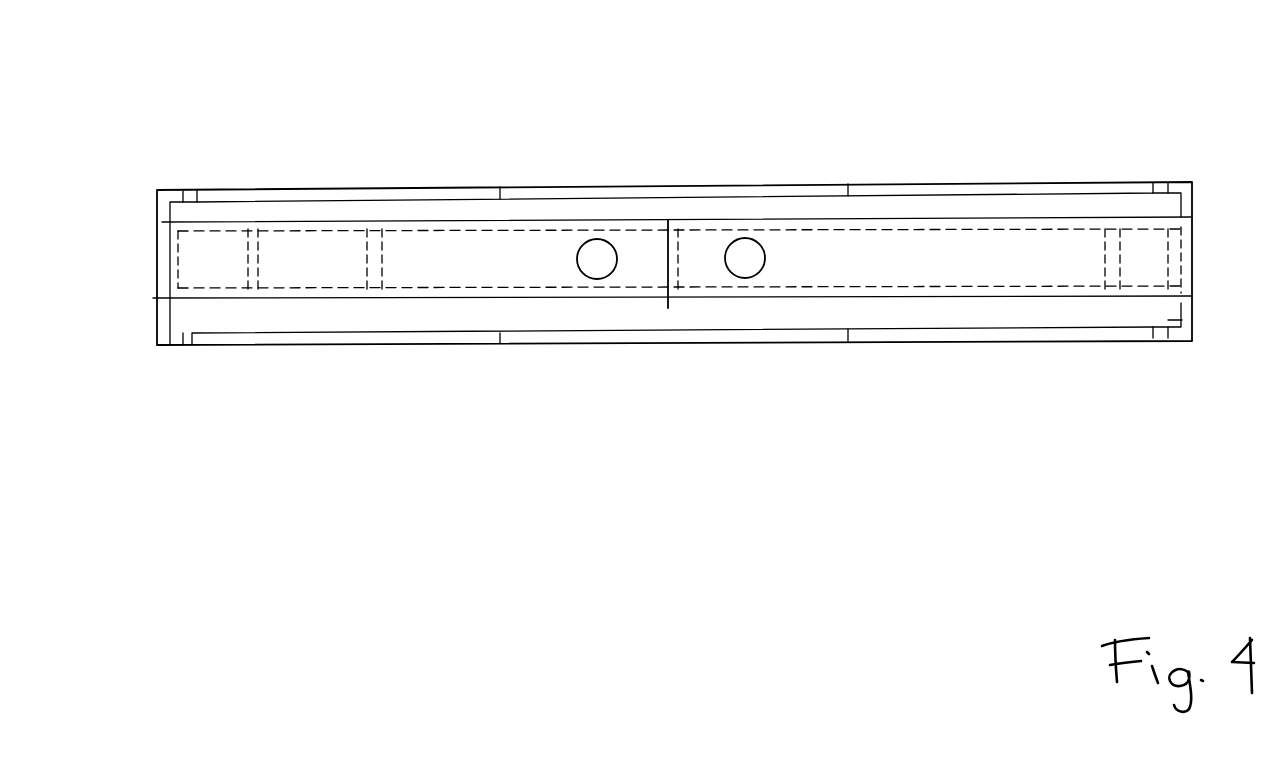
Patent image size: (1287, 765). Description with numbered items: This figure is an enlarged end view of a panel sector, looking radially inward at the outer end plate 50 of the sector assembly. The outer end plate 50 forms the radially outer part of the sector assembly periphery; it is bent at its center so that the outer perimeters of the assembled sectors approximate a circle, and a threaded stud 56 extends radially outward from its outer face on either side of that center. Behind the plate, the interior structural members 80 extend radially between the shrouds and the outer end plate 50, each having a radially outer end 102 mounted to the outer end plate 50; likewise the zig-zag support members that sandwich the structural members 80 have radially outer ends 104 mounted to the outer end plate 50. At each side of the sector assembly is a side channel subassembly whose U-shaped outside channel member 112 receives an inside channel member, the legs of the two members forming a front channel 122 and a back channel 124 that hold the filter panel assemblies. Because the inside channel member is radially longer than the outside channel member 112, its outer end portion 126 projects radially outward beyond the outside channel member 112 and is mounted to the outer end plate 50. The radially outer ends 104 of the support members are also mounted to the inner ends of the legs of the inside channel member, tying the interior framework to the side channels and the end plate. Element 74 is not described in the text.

The outer end plate 50 is at (597, 300).
The threaded stud 56 is at (578, 258).
The tube wall 74 is at (598, 187).
The structural member 80 is at (678, 218).
The radially outer end of structural member 102 is at (473, 270).
The radially outer end of support member 104 is at (258, 228).
The outside channel member 112 is at (163, 213).
The front channel 122 is at (186, 197).
The back channel 124 is at (172, 317).
The outer end portion of inside channel member 126 is at (165, 272).